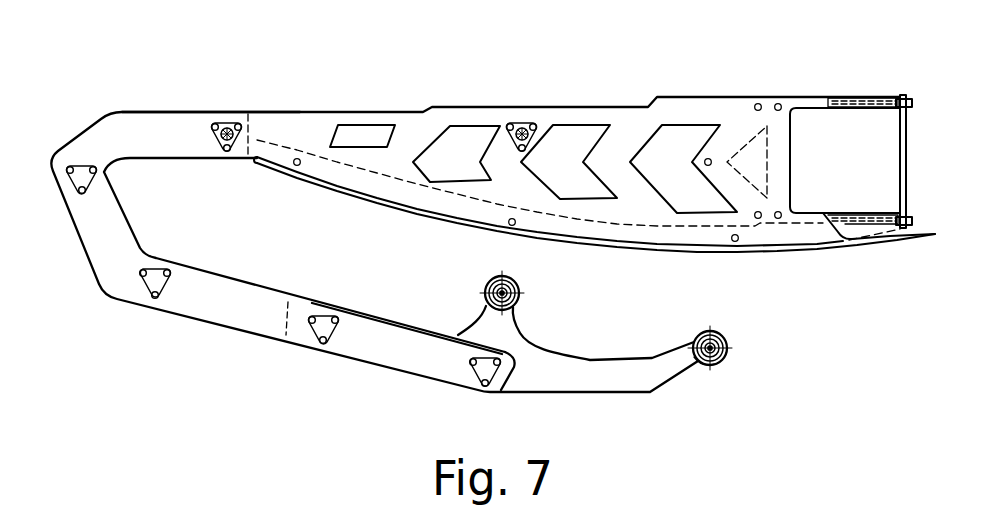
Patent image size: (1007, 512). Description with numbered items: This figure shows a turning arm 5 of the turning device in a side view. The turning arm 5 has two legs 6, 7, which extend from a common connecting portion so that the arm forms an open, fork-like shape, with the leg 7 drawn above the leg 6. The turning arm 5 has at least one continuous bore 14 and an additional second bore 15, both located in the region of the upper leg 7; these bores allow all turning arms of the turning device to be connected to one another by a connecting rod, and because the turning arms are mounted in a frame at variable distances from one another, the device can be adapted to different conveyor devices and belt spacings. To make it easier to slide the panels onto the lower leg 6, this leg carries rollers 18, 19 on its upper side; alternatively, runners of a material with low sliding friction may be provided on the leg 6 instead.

The turning arm 5 is at (81, 271).
The leg 6 is at (222, 303).
The leg 7 is at (720, 110).
The continuous bore 14 is at (224, 122).
The second bore 15 is at (522, 122).
The roller 18 is at (483, 293).
The roller 19 is at (724, 336).